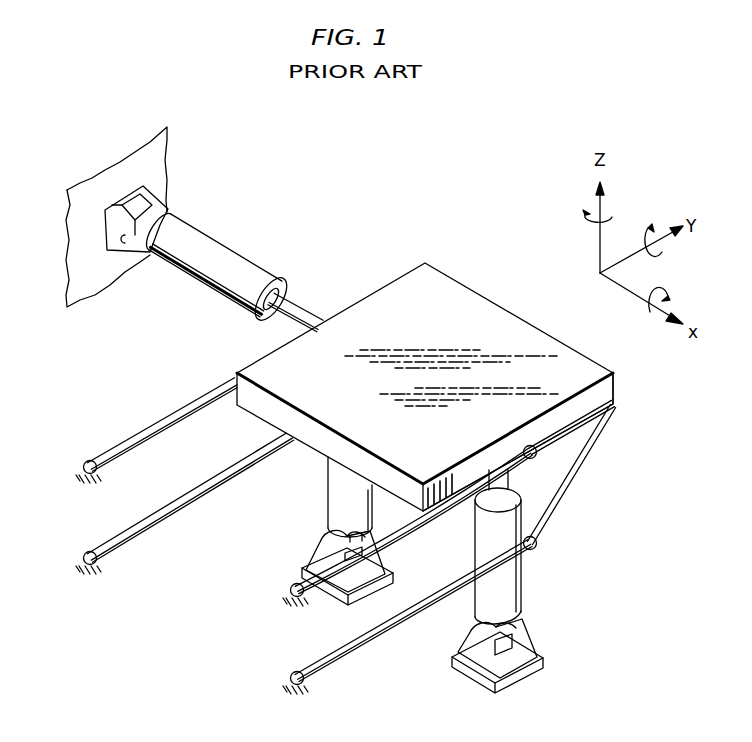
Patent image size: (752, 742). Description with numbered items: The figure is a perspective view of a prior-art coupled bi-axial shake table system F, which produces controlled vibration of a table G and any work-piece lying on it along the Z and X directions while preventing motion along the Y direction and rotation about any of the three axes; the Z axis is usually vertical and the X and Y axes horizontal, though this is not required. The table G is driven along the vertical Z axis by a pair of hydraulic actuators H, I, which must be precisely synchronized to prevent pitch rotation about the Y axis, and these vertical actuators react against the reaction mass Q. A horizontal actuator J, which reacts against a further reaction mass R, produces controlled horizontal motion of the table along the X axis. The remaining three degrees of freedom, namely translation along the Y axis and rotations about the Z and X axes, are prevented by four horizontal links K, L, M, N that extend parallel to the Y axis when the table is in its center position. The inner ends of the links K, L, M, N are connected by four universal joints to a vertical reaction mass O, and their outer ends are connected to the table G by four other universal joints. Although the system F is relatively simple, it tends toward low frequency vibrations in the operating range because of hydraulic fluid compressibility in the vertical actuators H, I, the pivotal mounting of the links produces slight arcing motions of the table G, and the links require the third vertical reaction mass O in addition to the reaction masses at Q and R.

The reaction mass R is at (164, 191).
The horizontal actuator J is at (242, 261).
The coupled bi-axial shake table system F is at (470, 284).
The table G is at (613, 394).
The horizontal link M is at (145, 433).
The horizontal link N is at (207, 488).
The vertical reaction mass O is at (88, 473).
The hydraulic actuator H is at (328, 488).
The hydraulic actuator I is at (527, 578).
The horizontal link K is at (410, 535).
The horizontal link L is at (415, 622).
The reaction mass Q is at (340, 603).